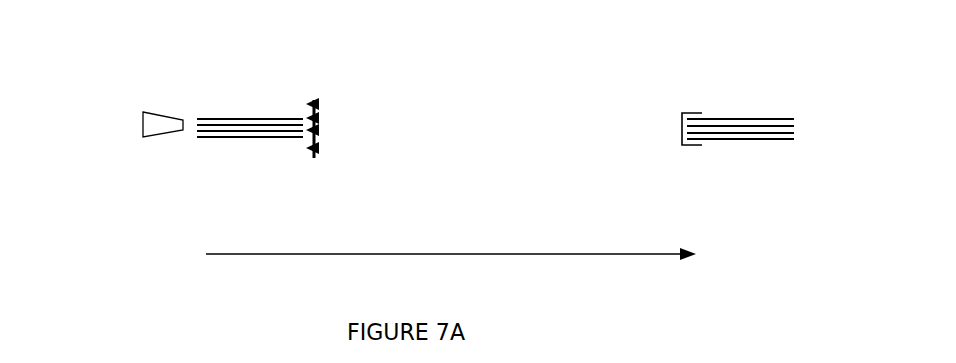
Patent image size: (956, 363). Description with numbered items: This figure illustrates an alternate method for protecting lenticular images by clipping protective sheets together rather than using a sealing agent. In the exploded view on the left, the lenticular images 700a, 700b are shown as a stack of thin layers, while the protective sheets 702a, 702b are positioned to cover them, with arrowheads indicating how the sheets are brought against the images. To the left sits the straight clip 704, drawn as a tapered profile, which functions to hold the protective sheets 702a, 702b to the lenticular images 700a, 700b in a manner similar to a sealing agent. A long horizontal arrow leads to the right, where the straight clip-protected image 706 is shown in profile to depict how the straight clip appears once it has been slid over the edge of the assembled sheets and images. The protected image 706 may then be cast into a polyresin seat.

The straight clip 704 is at (136, 142).
The lenticular image 700a is at (322, 117).
The lenticular image 700b is at (322, 131).
The protective sheet 702a is at (315, 107).
The protective sheet 702b is at (317, 149).
The straight clip-protected image 706 is at (803, 118).